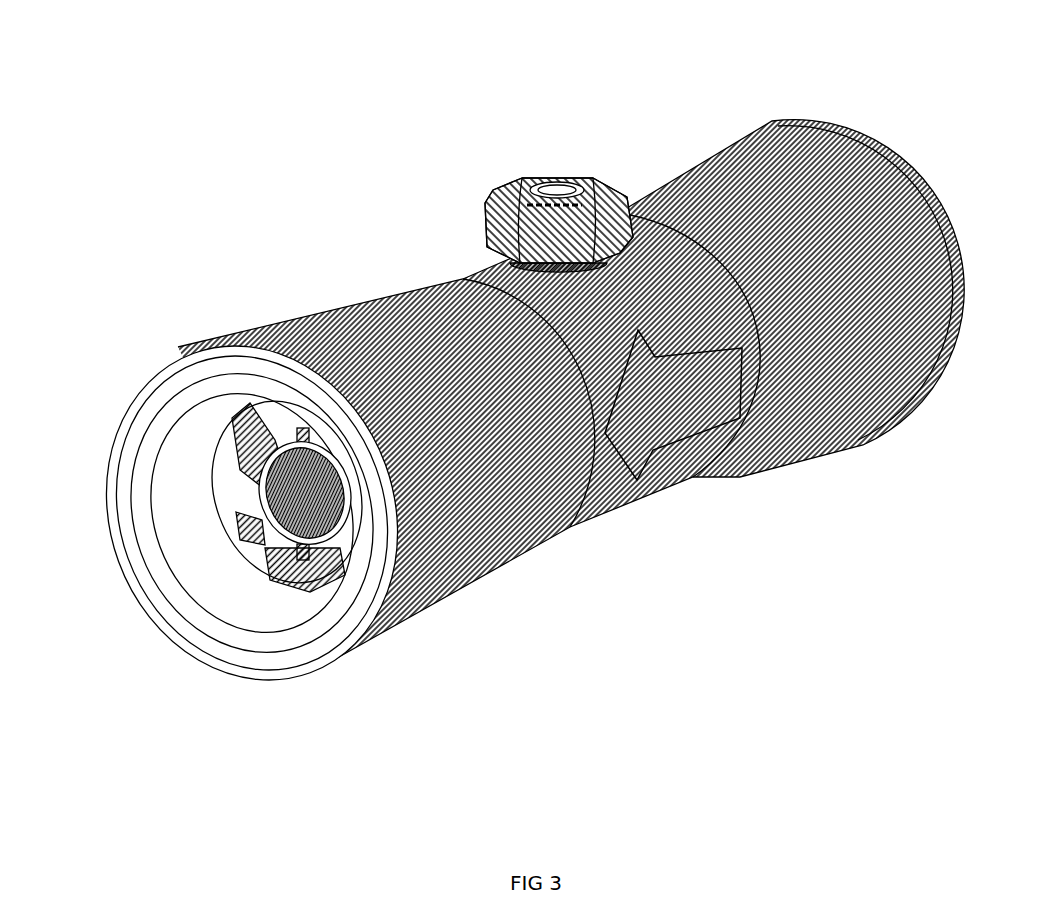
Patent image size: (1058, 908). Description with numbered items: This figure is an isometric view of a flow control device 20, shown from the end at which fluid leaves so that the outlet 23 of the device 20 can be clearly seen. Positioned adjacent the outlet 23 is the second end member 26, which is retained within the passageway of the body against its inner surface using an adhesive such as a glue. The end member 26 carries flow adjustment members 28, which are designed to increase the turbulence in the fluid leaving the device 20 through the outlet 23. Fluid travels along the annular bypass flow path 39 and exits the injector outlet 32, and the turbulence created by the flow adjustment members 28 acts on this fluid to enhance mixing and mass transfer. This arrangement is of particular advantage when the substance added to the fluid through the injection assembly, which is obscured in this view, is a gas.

The flow control device 20 is at (663, 128).
The outlet 23 is at (214, 563).
The second end member 26 is at (126, 536).
The flow adjustment members 28 is at (257, 537).
The injector outlet 32 is at (305, 494).
The annular bypass flow path 39 is at (324, 574).